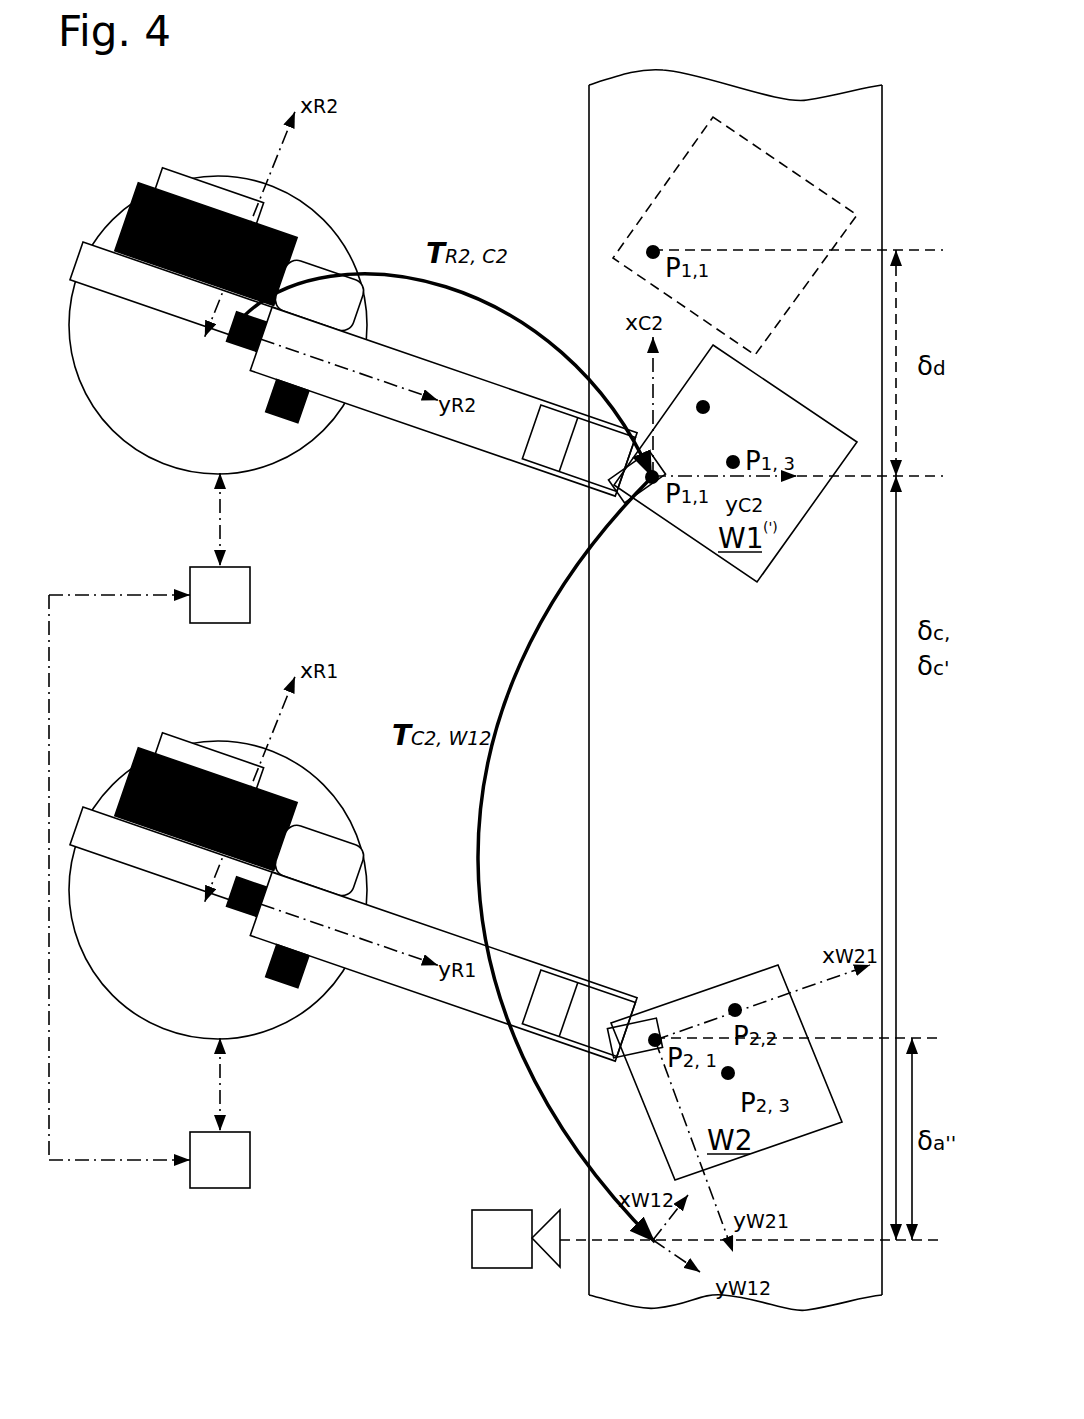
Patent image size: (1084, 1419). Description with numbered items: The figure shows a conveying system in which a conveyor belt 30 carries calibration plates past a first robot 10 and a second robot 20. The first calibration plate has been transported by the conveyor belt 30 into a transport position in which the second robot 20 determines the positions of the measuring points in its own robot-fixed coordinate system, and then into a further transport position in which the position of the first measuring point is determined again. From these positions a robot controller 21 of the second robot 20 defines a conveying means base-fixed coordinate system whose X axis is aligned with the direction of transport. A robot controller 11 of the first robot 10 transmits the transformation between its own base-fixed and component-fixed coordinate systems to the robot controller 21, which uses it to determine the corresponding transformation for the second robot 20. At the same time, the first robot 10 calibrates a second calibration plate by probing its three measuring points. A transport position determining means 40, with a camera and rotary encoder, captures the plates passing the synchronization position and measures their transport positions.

The first robot 10 is at (160, 987).
The robot controller of the first robot 11 is at (236, 1177).
The second robot 20 is at (160, 422).
The robot controller of the second robot 21 is at (236, 612).
The conveyor belt 30 is at (865, 132).
The transport position determining means 40 is at (518, 1253).